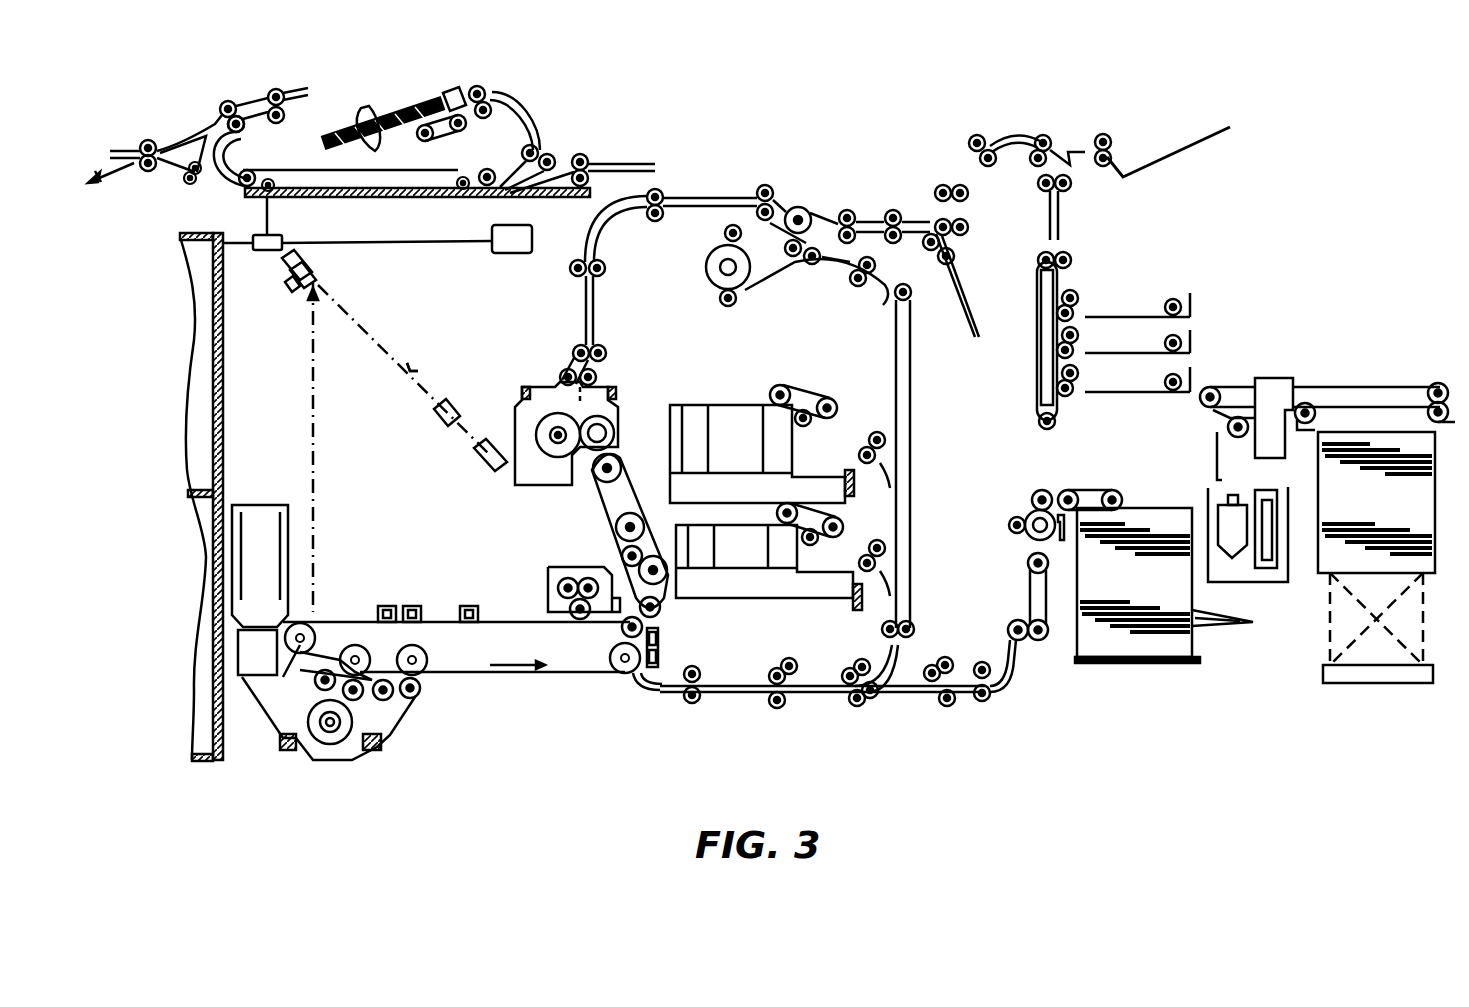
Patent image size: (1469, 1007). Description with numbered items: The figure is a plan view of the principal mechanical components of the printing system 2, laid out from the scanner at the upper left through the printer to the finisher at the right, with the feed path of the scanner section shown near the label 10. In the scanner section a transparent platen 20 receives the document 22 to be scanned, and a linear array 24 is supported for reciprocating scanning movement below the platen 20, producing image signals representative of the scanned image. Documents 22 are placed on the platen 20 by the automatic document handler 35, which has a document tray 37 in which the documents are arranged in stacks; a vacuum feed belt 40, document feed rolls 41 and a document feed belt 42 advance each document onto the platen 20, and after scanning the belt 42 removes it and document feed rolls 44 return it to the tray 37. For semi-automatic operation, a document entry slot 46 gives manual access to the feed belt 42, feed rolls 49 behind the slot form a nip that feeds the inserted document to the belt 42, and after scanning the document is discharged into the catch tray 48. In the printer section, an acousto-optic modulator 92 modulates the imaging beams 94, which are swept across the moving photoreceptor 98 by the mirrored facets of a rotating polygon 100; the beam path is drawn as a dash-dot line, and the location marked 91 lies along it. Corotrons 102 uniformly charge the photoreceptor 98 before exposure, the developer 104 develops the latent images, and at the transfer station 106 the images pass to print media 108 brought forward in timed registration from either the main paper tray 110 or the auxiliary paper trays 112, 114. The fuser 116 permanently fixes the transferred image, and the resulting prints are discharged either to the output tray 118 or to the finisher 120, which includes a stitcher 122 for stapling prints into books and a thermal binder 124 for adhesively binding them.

The printing system 2 is at (776, 110).
The web feed station 10 is at (173, 114).
The transparent platen 20 is at (420, 200).
The document 22 is at (394, 110).
The linear array 24 is at (253, 236).
The automatic document handler 35 is at (384, 100).
The document tray 37 is at (370, 138).
The vacuum feed belt 40 is at (472, 128).
The document feed rolls 41 is at (482, 90).
The document feed belt 42 is at (430, 168).
The document feed rolls 44 is at (246, 124).
The document entry slot 46 is at (606, 160).
The catch tray 48 is at (112, 168).
The feed rolls 49 is at (580, 154).
The sensor 91 is at (489, 462).
The acousto-optic modulator 92 is at (450, 401).
The imaging beams 94 is at (420, 354).
The photoreceptor 98 is at (493, 614).
The rotating polygon 100 is at (296, 288).
The corotrons 102 is at (470, 606).
The developer 104 is at (400, 712).
The transfer station 106 is at (626, 694).
The print media 108 is at (1249, 623).
The main paper tray 110 is at (1115, 663).
The auxiliary paper tray 112 is at (732, 597).
The auxiliary paper tray 114 is at (727, 407).
The fuser 116 is at (628, 420).
The output tray 118 is at (1205, 143).
The finisher 120 is at (1243, 313).
The stitcher 122 is at (1188, 323).
The thermal binder 124 is at (1347, 371).